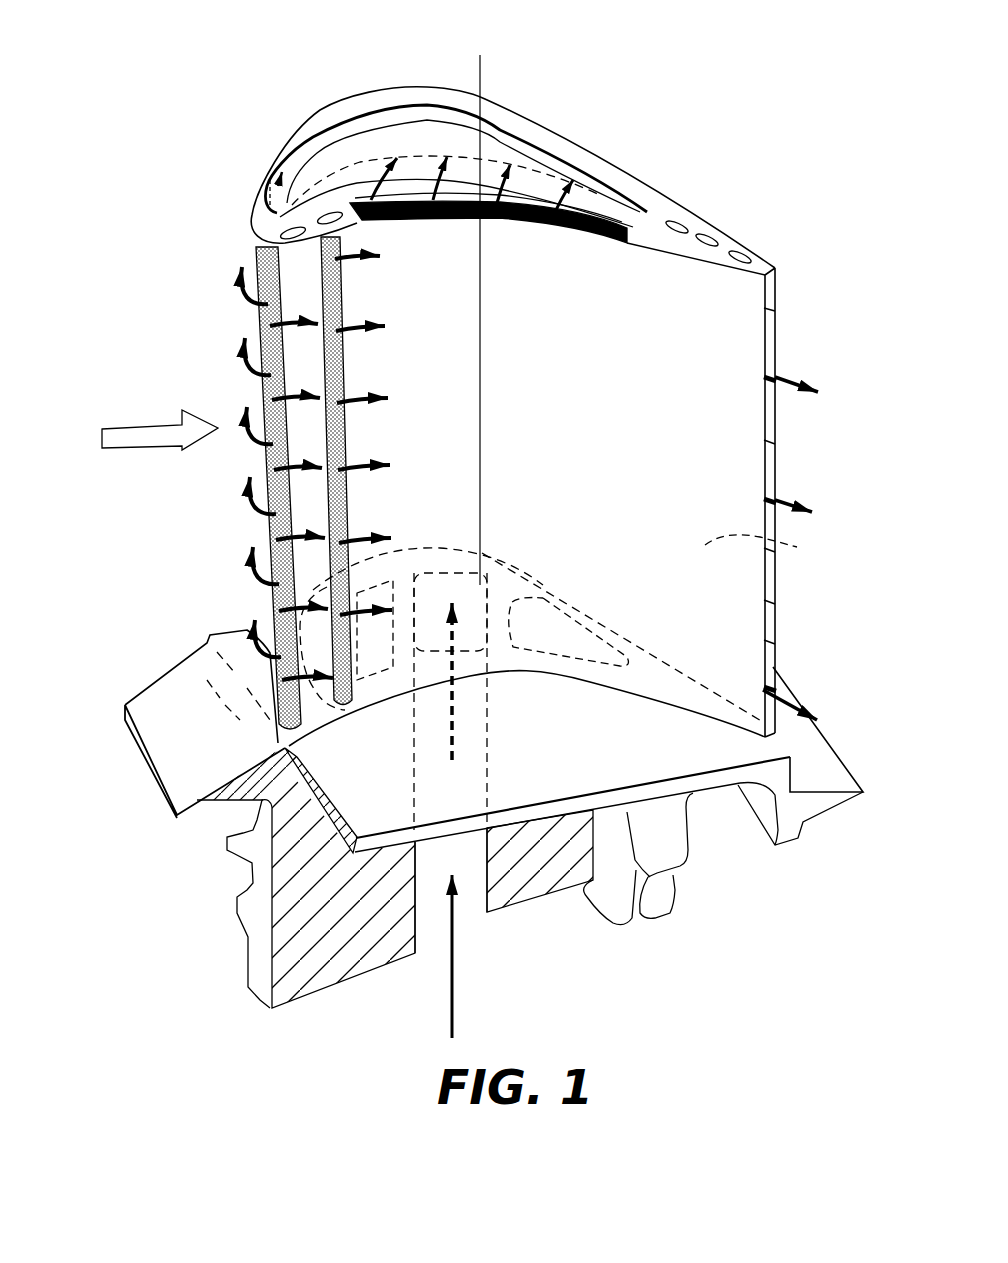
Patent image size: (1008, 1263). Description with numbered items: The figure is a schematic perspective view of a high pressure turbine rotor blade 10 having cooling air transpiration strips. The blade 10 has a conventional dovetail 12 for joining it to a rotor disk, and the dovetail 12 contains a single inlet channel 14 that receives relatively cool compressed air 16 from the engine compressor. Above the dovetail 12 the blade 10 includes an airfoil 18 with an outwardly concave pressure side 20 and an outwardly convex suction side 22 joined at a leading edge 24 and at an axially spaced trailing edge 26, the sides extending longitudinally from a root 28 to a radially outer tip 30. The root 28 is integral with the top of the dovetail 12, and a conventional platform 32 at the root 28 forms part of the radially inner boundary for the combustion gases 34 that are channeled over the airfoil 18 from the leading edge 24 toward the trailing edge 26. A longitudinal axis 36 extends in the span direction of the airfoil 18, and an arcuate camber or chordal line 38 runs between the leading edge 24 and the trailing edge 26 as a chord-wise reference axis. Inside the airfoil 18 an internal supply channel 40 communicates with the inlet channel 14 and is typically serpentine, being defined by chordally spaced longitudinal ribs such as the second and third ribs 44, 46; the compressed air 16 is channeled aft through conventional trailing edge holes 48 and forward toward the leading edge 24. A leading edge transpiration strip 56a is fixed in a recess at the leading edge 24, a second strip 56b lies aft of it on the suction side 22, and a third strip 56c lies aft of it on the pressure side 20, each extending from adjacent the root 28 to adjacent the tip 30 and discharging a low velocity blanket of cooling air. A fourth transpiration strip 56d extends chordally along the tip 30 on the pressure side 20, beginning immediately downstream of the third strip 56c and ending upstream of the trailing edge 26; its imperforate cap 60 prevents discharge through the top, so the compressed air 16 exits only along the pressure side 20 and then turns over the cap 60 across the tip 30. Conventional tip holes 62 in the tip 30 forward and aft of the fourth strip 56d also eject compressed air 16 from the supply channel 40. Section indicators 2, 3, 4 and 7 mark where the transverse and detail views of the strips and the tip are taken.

The high pressure turbine rotor blade 10 is at (762, 243).
The dovetail 12 is at (240, 948).
The inlet channel 14 is at (478, 918).
The compressed air 16 is at (457, 1017).
The airfoil 18 is at (623, 167).
The pressure side 20 is at (712, 578).
The suction side 22 is at (769, 548).
The leading edge 24 is at (278, 743).
The trailing edge 26 is at (773, 652).
The root 28 is at (587, 682).
The tip 30 is at (538, 137).
The platform 32 is at (654, 758).
The combustion gases 34 is at (132, 413).
The longitudinal axis 36 is at (478, 62).
The camber or chordal line 38 is at (330, 182).
The internal supply channel 40 is at (454, 592).
The second rib 44 is at (414, 560).
The third rib 46 is at (543, 587).
The trailing edge holes 48 is at (764, 450).
The leading edge transpiration strip 56a is at (265, 330).
The second transpiration strip 56b is at (262, 178).
The third transpiration strip 56c is at (343, 383).
The fourth transpiration strip 56d is at (509, 253).
The imperforate cap 60 is at (520, 201).
The tip holes 62 is at (677, 222).
The section line 2- 2 is at (260, 458).
The section line 3- 3 is at (237, 253).
The section line 4- 4 is at (82, 518).
The section line 7- 7 is at (393, 147).